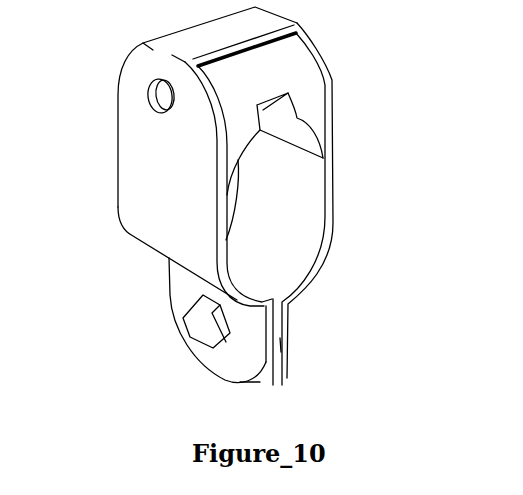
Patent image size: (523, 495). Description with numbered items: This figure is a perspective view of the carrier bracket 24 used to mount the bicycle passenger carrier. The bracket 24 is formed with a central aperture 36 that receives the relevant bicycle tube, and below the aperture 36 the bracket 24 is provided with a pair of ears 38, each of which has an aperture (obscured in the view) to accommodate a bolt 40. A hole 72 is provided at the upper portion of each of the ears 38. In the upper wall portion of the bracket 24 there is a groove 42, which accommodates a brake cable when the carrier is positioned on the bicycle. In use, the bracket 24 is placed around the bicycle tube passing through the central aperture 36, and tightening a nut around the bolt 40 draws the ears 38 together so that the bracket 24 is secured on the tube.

The bracket 24 is at (354, 131).
The central aperture 36 is at (287, 217).
The hole 72 is at (162, 95).
The groove 42 is at (267, 110).
The ears 38 is at (242, 357).
The bolt 40 is at (188, 332).